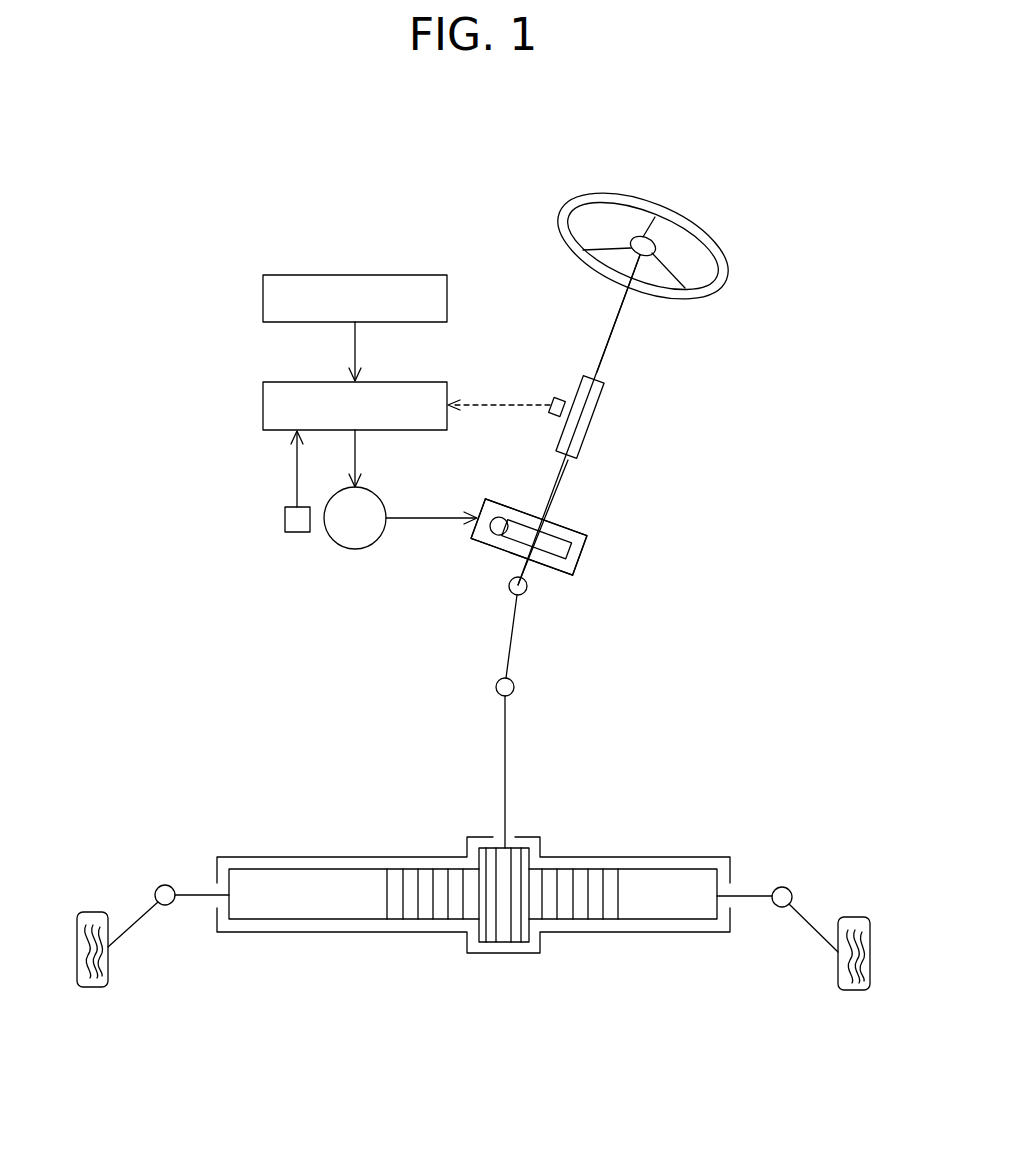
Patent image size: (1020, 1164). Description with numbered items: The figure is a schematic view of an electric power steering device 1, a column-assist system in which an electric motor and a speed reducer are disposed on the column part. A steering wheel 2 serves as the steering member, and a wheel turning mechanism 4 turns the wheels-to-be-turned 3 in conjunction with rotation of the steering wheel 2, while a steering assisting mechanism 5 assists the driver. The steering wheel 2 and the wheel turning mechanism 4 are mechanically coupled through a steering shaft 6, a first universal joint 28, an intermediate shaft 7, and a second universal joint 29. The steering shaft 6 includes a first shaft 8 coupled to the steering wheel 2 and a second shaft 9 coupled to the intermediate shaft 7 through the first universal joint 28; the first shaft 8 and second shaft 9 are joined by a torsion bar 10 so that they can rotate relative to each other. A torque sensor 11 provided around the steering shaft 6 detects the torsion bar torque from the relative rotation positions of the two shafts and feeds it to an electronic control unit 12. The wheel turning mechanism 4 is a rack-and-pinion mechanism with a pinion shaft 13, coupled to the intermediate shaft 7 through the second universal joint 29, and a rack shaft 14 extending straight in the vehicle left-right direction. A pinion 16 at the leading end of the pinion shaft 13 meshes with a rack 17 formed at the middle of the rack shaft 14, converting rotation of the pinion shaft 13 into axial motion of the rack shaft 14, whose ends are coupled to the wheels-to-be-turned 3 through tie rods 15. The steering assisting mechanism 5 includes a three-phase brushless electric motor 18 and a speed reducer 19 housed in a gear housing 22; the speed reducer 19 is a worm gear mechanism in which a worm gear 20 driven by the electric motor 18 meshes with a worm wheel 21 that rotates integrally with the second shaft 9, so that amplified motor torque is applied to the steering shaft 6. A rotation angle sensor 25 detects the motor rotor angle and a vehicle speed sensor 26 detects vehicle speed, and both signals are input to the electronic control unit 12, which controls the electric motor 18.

The electric power steering device 1 is at (348, 192).
The steering wheel 2 is at (647, 202).
The wheels-to-be-turned 3 is at (92, 912).
The wheel turning mechanism 4 is at (565, 870).
The steering assisting mechanism 5 is at (487, 498).
The steering shaft 6 is at (618, 325).
The intermediate shaft 7 is at (512, 652).
The first shaft 8 is at (602, 362).
The second shaft 9 is at (565, 465).
The torsion bar 10 is at (582, 418).
The torque sensor 11 is at (552, 418).
The electronic control unit 12 is at (263, 404).
The pinion shaft 13 is at (507, 752).
The rack shaft 14 is at (666, 921).
The tie rod 15 is at (140, 920).
The pinion 16 is at (503, 935).
The rack 17 is at (413, 915).
The electric motor 18 is at (355, 540).
The speed reducer 19 is at (582, 533).
The worm gear 20 is at (496, 532).
The worm wheel 21 is at (553, 548).
The gear housing 22 is at (563, 577).
The rotation angle sensor 25 is at (285, 518).
The vehicle speed sensor 26 is at (263, 297).
The first universal joint 28 is at (509, 588).
The second universal joint 29 is at (496, 689).